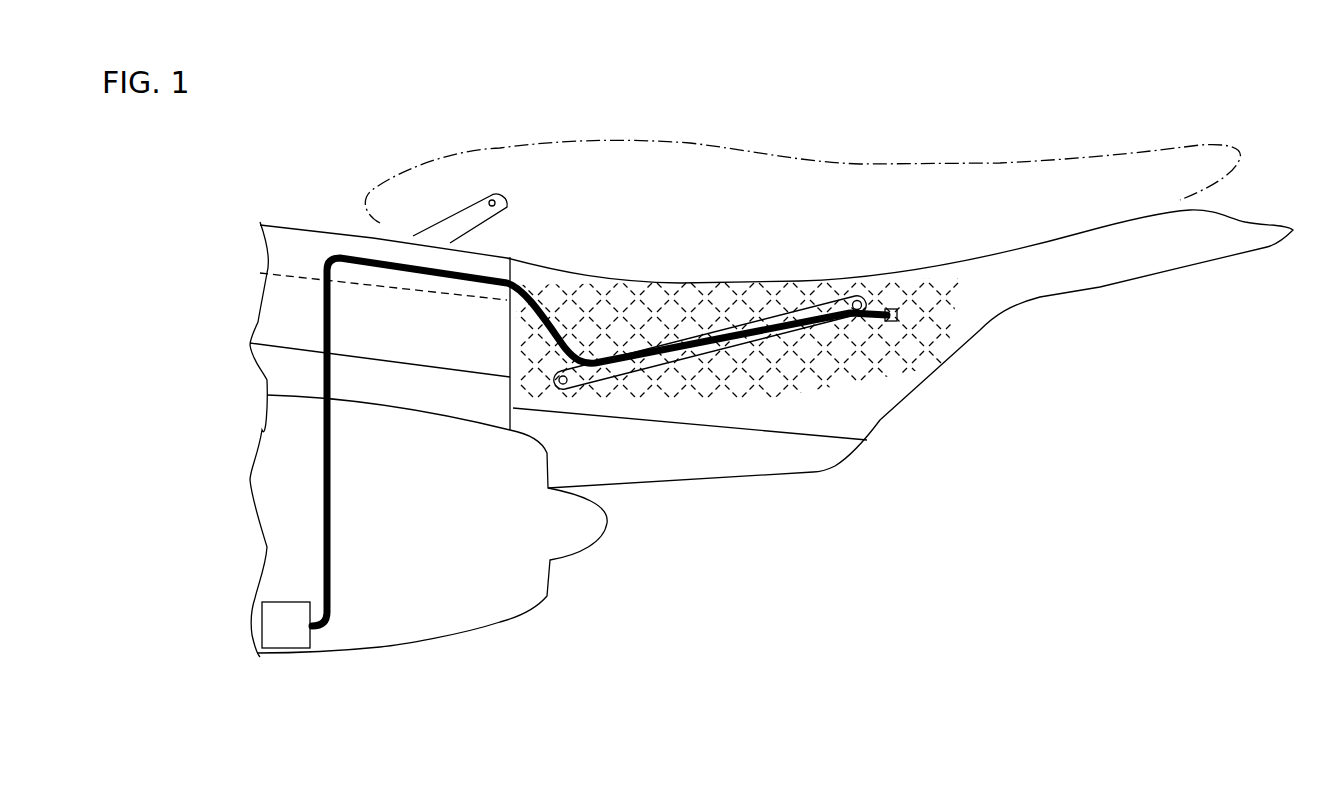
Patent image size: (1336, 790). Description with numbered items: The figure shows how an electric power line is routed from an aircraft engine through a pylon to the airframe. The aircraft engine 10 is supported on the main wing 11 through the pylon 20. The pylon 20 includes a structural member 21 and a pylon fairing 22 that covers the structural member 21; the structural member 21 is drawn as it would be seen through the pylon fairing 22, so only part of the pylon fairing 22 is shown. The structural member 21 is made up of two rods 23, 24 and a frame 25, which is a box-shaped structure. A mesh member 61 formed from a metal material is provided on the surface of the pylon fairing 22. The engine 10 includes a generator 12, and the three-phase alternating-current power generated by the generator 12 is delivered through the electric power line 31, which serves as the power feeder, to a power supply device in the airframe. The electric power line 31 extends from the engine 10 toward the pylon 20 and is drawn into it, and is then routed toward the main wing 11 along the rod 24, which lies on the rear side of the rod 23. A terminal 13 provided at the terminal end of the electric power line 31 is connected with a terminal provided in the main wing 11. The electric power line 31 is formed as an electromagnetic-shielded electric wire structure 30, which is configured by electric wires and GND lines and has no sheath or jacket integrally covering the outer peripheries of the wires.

The aircraft engine 10 is at (380, 647).
The main wing 11 is at (1090, 157).
The generator 12 is at (273, 601).
The terminal 13 is at (900, 313).
The pylon 20 is at (805, 264).
The structural member 21 is at (583, 270).
The pylon fairing 22 is at (820, 471).
The rod 23 is at (457, 207).
The rod 24 is at (840, 296).
The frame 25 is at (530, 257).
The electromagnetic-shielded electric wire structure 30 is at (599, 364).
The electric power line 31 is at (578, 357).
The mesh member 61 is at (883, 363).